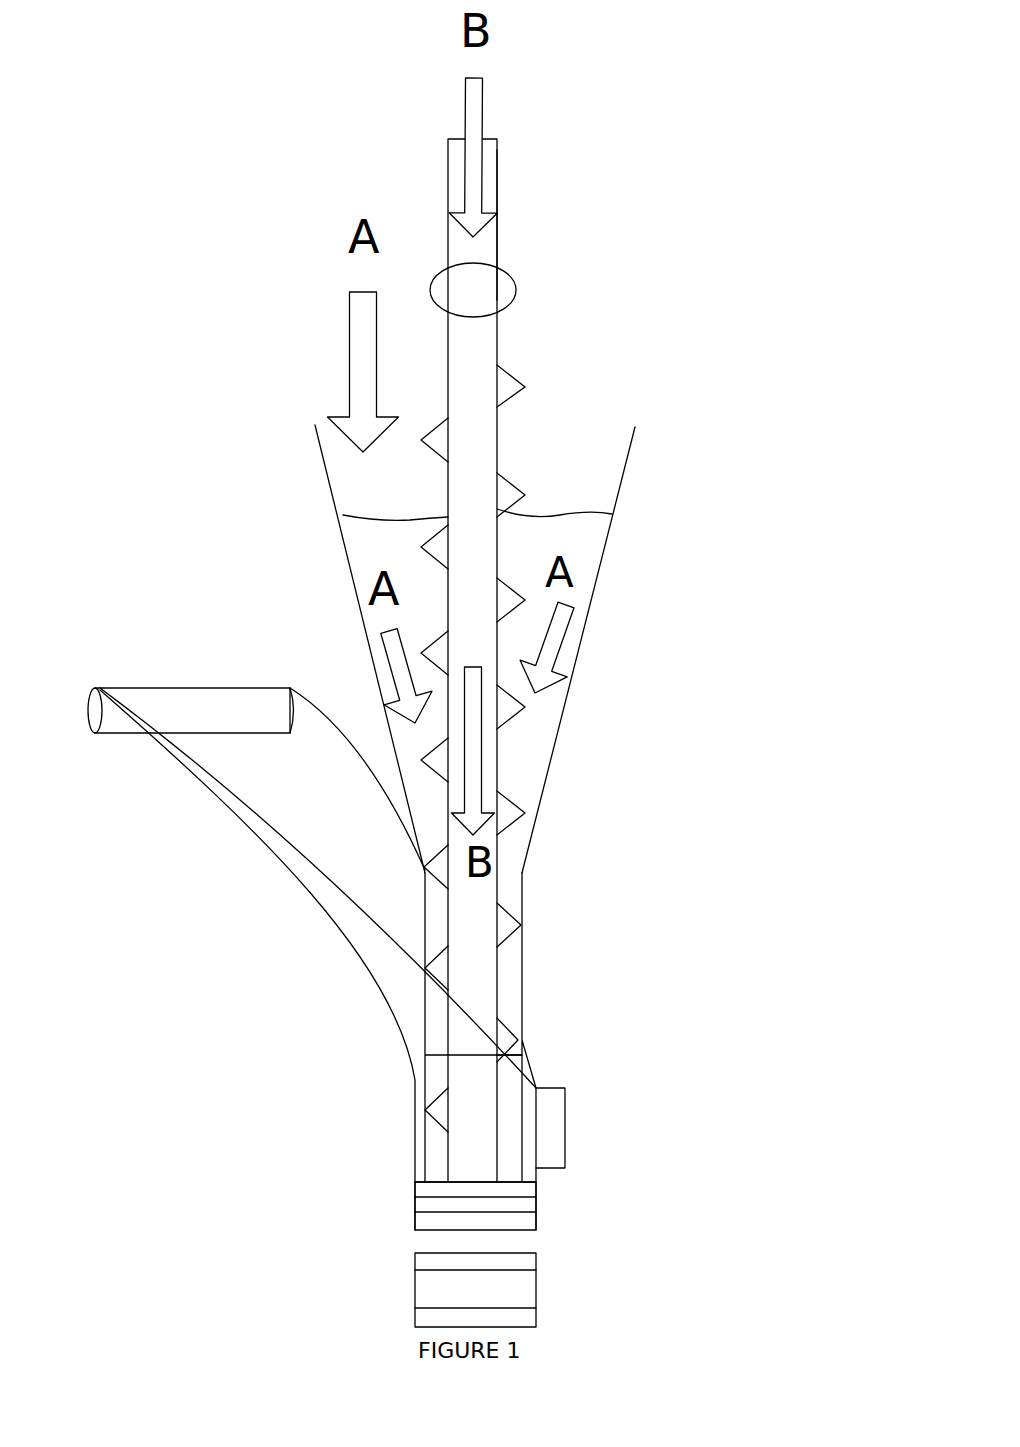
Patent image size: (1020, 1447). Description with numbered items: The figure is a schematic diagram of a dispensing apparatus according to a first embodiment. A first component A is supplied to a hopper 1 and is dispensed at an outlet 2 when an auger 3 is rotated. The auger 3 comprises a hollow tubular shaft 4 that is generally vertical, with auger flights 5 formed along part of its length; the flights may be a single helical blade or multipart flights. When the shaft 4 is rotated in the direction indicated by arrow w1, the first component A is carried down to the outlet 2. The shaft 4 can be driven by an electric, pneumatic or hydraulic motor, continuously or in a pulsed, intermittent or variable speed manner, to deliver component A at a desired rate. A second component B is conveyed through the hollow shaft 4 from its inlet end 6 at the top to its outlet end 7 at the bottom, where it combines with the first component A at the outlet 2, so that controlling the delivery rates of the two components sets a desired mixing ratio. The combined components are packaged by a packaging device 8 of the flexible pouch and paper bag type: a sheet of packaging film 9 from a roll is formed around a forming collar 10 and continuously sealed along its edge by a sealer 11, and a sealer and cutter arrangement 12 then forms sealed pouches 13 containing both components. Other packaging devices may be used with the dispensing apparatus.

The hopper 1 is at (323, 463).
The outlet 2 is at (537, 1182).
The auger 3 is at (513, 170).
The hollow tubular shaft 4 is at (490, 217).
The auger flights 5 is at (515, 493).
The inlet end 6 is at (490, 140).
The outlet end 7 is at (458, 1180).
The packaging device 8 is at (613, 1037).
The packaging film 9 is at (267, 793).
The forming collar 10 is at (513, 1062).
The sealer 11 is at (550, 1133).
The sealer and cutter arrangement 12 is at (573, 1203).
The sealed pouches 13 is at (565, 1305).
The arrow indicating direction of rotation w1 is at (505, 259).